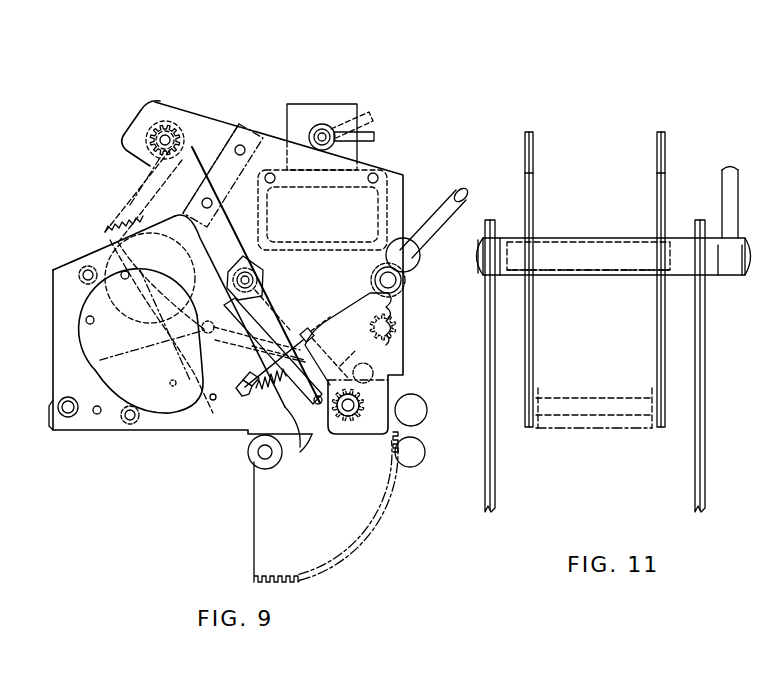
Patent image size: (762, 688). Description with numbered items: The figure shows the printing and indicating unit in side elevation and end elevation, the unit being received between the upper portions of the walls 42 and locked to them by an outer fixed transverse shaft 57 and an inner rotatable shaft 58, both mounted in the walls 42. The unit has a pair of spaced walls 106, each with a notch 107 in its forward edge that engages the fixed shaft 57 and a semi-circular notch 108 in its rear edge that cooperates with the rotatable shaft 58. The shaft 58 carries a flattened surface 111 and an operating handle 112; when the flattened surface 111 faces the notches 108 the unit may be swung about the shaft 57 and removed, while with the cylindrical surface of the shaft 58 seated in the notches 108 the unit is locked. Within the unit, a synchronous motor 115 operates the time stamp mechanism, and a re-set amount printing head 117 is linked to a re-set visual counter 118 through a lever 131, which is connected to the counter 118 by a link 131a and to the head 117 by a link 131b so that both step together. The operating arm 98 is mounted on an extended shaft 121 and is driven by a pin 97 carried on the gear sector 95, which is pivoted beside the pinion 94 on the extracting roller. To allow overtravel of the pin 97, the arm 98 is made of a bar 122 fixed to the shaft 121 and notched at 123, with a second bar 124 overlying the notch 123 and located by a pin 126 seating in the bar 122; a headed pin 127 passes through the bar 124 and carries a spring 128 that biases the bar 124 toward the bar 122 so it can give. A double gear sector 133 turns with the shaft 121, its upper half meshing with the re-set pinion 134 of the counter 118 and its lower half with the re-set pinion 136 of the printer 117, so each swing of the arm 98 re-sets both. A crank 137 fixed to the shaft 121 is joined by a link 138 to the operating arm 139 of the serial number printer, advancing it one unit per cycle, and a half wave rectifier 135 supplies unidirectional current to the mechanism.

In FIG. 9, the re-set visual counter 118 is at (125, 134).
In FIG. 9, the re-set pinion 134 is at (170, 136).
In FIG. 9, the half wave rectifier 135 is at (315, 110).
In FIG. 9, the link 131a is at (140, 176).
In FIG. 9, the synchronous motor 115 is at (88, 307).
In FIG. 9, the double gear sector 133 is at (225, 242).
In FIG. 9, the lever 131 is at (142, 306).
In FIG. 9, the link 131b is at (190, 337).
In FIG. 9, the operating arm 98 is at (280, 322).
In FIG. 9, the extended shaft 121 is at (258, 278).
In FIG. 9, the crank 137 is at (270, 294).
In FIG. 9, the link 138 is at (287, 392).
In FIG. 9, the bar 122 is at (306, 357).
In FIG. 9, the notch 123 is at (350, 360).
In FIG. 9, the pin 126 is at (244, 328).
In FIG. 9, the second bar 124 is at (252, 346).
In FIG. 9, the spring 128 is at (246, 379).
In FIG. 9, the headed pin 127 is at (242, 392).
In FIG. 9, the inner rotatable shaft 58 is at (420, 253).
In FIG. 11, the inner rotatable shaft 58 is at (568, 258).
In FIG. 9, the flattened surface 111 is at (406, 284).
In FIG. 11, the flattened surface 111 is at (603, 262).
In FIG. 9, the operating handle 112 is at (449, 193).
In FIG. 11, the operating handle 112 is at (725, 183).
In FIG. 9, the semi-circular notch 108 is at (387, 247).
In FIG. 9, the operating arm 139 is at (392, 384).
In FIG. 9, the re-set pinion 136 is at (406, 402).
In FIG. 9, the re-set amount printing head 117 is at (360, 420).
In FIG. 9, the notch 107 is at (57, 415).
In FIG. 9, the outer fixed transverse shaft 57 is at (72, 418).
In FIG. 9, the pin 97 is at (312, 423).
In FIG. 9, the pinion 94 is at (418, 462).
In FIG. 9, the gear sector 95 is at (262, 528).
In FIG. 11, the walls 42 is at (496, 484).
In FIG. 11, the spaced walls 106 is at (531, 364).